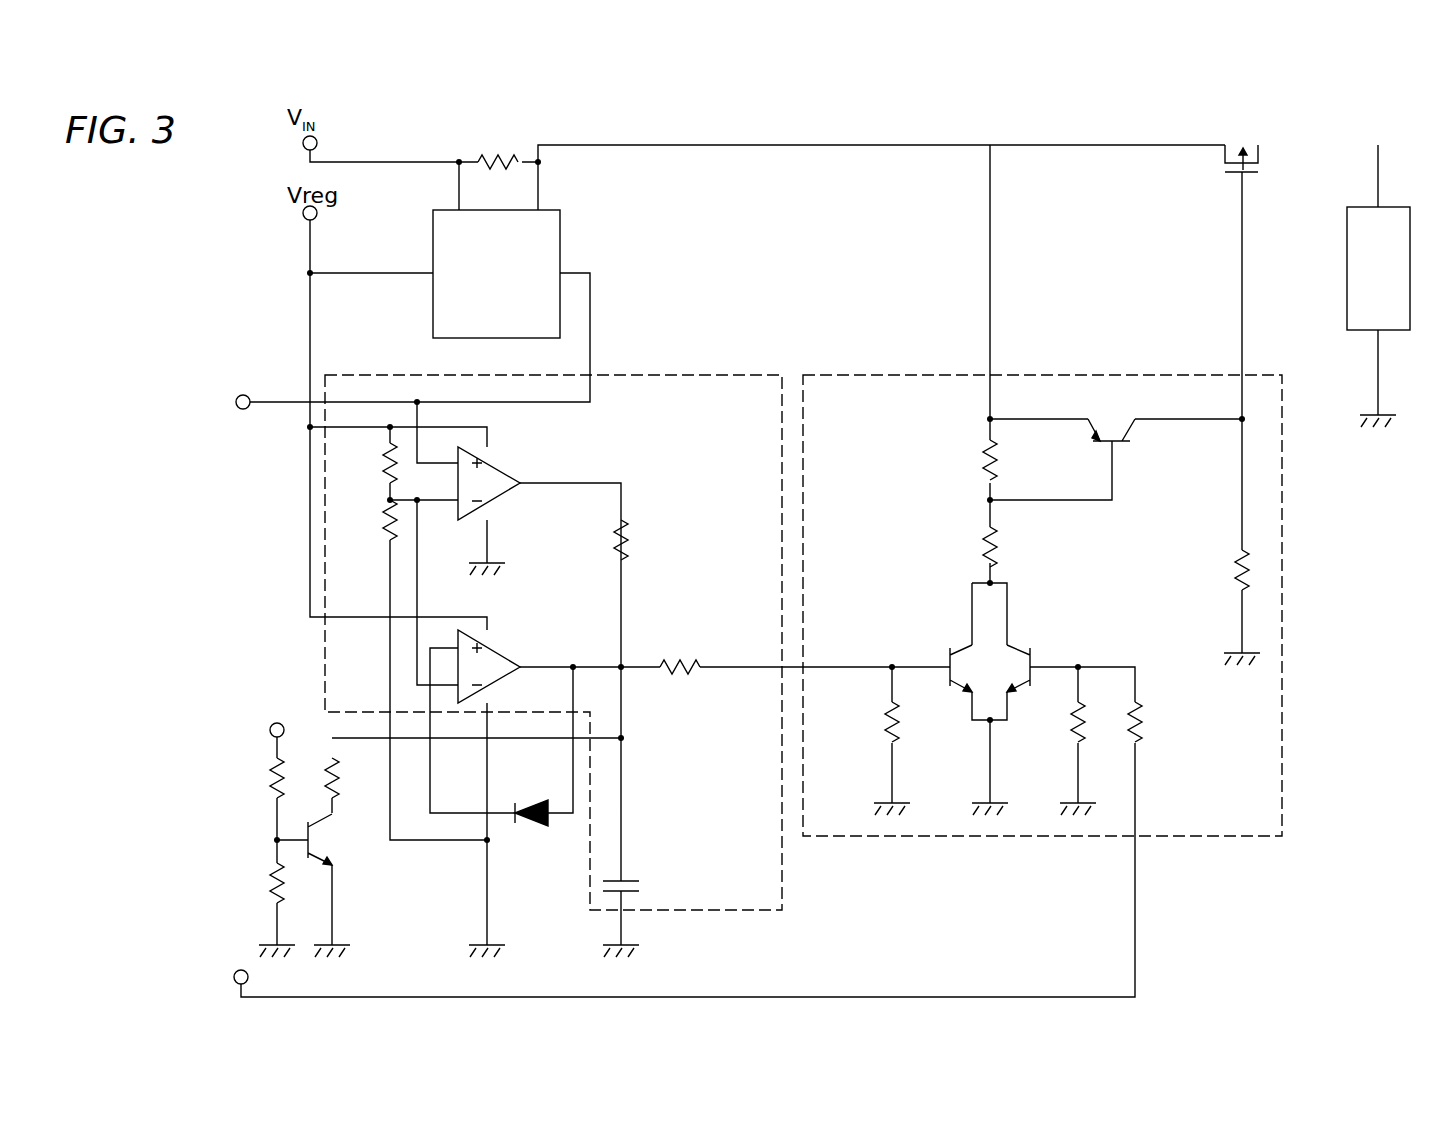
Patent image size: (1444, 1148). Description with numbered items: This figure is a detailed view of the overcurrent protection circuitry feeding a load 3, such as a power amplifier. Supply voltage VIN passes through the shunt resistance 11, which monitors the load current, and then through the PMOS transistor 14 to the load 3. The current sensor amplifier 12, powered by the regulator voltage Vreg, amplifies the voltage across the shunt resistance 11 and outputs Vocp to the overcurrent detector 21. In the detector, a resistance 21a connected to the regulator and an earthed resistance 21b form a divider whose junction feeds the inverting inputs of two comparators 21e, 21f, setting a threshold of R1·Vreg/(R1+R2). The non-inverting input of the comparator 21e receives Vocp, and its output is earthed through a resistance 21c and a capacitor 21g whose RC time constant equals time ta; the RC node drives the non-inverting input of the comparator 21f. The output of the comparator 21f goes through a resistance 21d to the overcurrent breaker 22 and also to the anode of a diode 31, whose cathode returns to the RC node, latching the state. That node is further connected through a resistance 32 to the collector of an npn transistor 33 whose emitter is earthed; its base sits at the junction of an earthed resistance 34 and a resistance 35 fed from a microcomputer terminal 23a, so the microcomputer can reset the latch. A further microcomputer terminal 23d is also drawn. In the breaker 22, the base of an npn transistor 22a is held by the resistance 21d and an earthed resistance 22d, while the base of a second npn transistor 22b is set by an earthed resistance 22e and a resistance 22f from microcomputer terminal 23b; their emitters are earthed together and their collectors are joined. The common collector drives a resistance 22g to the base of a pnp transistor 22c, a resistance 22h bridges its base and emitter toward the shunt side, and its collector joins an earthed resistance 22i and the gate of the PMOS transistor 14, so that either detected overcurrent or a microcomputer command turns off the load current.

The load 3 is at (1395, 205).
The shunt resistance 11 is at (490, 147).
The current sensor amplifier 12 is at (560, 232).
The PMOS transistor 14 is at (1200, 175).
The overcurrent detector 21 is at (752, 375).
The resistance 21a is at (382, 473).
The resistance 21b is at (383, 550).
The resistance 21c is at (628, 523).
The resistance 21d is at (660, 655).
The comparator 21e is at (507, 468).
The comparator 21f is at (508, 642).
The capacitor 21g is at (628, 873).
The overcurrent breaker 22 is at (837, 375).
The npn transistor 22a is at (945, 656).
The npn transistor 22b is at (1038, 660).
The pnp transistor 22c is at (1124, 446).
The resistance 22d is at (905, 722).
The resistance 22e is at (1070, 718).
The resistance 22f is at (1148, 705).
The resistance 22g is at (1000, 543).
The resistance 22h is at (1000, 465).
The resistance 22i is at (1232, 568).
The terminal 23a is at (273, 722).
The terminal 23b is at (238, 970).
The terminal 23d is at (240, 395).
The diode 31 is at (540, 825).
The resistance 32 is at (320, 773).
The npn transistor 33 is at (335, 842).
The resistance 34 is at (265, 880).
The resistance 35 is at (265, 770).